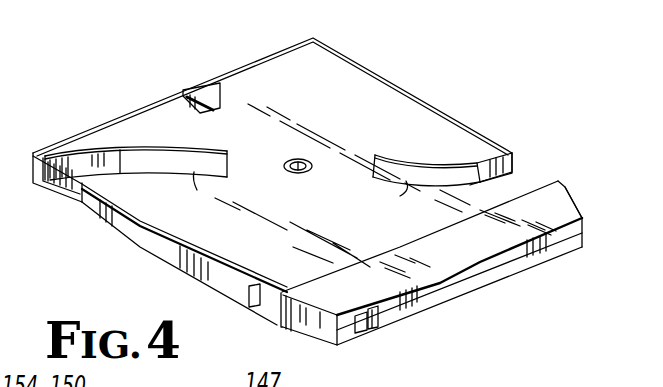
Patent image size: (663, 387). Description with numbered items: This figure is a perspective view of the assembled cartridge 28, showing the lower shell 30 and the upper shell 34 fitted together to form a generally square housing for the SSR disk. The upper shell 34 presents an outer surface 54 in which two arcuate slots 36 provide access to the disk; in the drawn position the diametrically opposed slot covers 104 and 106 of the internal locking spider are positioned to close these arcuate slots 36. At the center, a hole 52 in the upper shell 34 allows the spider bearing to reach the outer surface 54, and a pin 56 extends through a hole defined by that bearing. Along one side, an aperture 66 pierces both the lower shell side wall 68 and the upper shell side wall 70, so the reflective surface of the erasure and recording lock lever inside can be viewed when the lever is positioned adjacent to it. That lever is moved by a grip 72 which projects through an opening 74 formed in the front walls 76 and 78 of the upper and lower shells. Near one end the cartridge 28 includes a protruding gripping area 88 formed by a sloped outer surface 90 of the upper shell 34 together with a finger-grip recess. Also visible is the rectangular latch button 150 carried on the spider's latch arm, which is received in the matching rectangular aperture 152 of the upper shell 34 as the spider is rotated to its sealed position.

The cartridge 28 is at (380, 66).
The lower shell 30 is at (136, 240).
The upper shell 34 is at (113, 206).
The arcuate slots 36 is at (295, 198).
The hole 52 is at (294, 159).
The outer surface 54 is at (347, 57).
The pin 56 is at (303, 160).
The aperture 66 is at (252, 308).
The lower shell side wall 68 is at (183, 262).
The upper shell side wall 70 is at (162, 235).
The grip 72 is at (373, 327).
The opening 74 is at (357, 327).
The front wall 76 is at (443, 297).
The front wall 78 is at (515, 253).
The protruding gripping area 88 is at (572, 210).
The sloped outer surface 90 is at (472, 250).
The slot cover 104 is at (443, 172).
The slot cover 106 is at (137, 158).
The latch button 150 is at (187, 92).
The rectangular aperture 152 is at (342, 172).